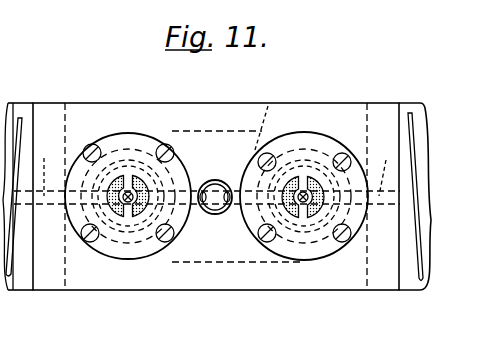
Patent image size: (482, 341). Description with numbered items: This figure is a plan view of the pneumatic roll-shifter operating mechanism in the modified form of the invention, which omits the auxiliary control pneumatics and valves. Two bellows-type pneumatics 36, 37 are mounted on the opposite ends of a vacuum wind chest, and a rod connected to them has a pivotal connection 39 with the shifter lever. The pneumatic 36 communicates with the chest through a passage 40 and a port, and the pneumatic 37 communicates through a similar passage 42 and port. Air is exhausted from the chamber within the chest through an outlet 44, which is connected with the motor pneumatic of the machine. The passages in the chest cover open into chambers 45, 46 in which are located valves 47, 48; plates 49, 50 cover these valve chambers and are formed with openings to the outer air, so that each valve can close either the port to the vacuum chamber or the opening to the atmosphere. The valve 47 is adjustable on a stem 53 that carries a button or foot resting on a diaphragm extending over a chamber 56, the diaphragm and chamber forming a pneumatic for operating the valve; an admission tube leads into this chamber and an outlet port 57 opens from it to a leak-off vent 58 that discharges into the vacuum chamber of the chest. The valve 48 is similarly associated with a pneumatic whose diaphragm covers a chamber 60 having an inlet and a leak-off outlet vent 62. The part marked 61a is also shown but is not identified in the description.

The pneumatic 36 is at (27, 282).
The pneumatic 37 is at (418, 130).
The pivotal connection 39 is at (268, 106).
The passage 40 is at (47, 166).
The passage 42 is at (387, 169).
The outlet 44 is at (216, 214).
The chamber 45 is at (162, 258).
The chamber 46 is at (283, 262).
The valve 47 is at (141, 216).
The valve 48 is at (320, 218).
The plate 49 is at (113, 140).
The plate 50 is at (330, 135).
The stem 53 is at (125, 216).
The chamber 56 is at (150, 145).
The outlet port 57 is at (198, 225).
The leak-off vent 58 is at (206, 185).
The chamber 60 is at (282, 150).
The bearing lug 61a is at (232, 234).
The leak-off outlet vent 62 is at (224, 192).